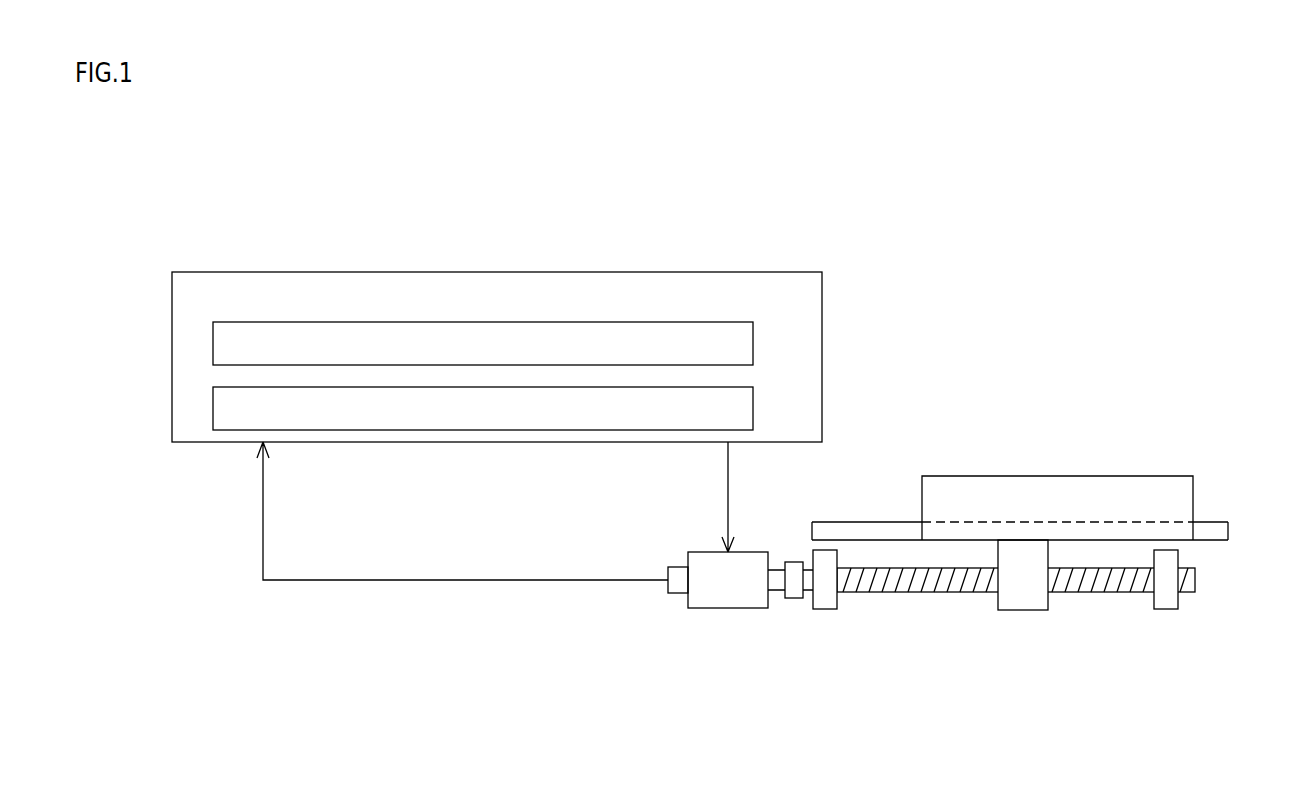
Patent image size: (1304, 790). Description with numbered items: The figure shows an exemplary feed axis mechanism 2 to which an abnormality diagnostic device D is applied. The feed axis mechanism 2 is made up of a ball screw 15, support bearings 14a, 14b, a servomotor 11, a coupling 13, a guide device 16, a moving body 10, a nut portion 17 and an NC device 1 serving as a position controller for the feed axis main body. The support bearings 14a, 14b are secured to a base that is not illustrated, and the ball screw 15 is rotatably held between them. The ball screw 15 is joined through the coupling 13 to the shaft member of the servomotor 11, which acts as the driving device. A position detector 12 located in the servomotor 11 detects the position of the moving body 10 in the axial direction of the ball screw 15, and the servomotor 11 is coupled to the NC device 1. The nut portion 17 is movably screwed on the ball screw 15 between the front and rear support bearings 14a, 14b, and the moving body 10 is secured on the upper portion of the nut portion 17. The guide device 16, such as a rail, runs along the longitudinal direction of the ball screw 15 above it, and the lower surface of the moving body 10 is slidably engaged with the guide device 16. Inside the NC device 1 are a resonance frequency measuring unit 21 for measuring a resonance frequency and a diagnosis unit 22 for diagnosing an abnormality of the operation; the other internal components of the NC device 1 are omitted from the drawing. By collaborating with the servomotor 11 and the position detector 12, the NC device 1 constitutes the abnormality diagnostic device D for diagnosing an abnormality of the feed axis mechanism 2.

The NC device 1 is at (727, 272).
The feed axis mechanism 2 is at (912, 390).
The moving body 10 is at (1108, 476).
The servomotor 11 is at (728, 608).
The position detector 12 is at (673, 593).
The coupling 13 is at (792, 598).
The support bearing 14a is at (822, 610).
The support bearing 14b is at (1163, 609).
The ball screw 15 is at (917, 593).
The guide device 16 is at (838, 522).
The nut portion 17 is at (1020, 610).
The resonance frequency measuring unit 21 is at (753, 343).
The diagnosis unit 22 is at (753, 408).
The abnormality diagnostic device D is at (852, 293).